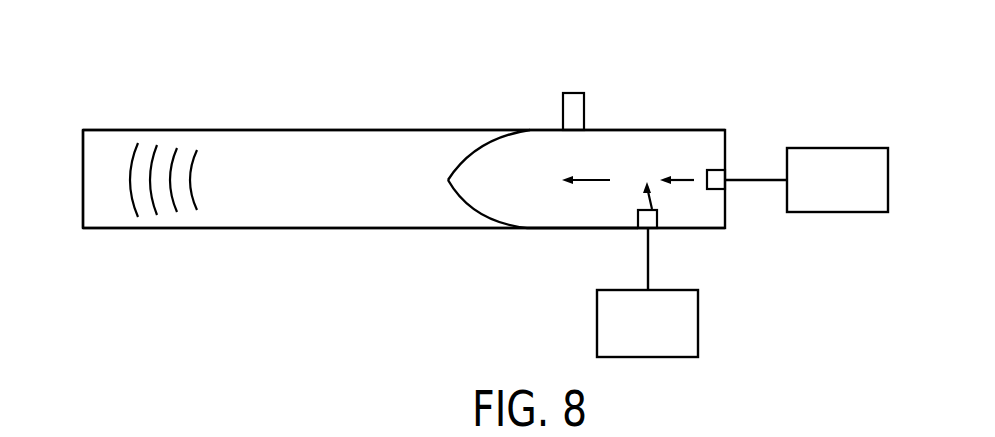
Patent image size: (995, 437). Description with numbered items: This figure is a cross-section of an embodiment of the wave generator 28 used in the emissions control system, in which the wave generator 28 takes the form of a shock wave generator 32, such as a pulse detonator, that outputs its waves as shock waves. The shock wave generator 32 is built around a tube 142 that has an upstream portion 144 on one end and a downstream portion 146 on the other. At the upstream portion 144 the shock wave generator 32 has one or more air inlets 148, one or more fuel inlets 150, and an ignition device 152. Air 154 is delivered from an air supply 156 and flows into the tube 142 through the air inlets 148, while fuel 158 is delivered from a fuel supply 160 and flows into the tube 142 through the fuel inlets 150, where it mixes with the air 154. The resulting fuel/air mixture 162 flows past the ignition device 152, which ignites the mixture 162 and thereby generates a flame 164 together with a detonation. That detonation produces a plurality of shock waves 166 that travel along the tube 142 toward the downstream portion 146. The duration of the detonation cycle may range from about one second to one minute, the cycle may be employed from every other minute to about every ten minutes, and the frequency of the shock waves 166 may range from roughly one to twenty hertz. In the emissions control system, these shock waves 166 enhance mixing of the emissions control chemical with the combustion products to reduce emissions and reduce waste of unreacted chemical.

The wave generator 28 is at (317, 110).
The shock wave generator 32 is at (402, 129).
The tube 142 is at (405, 228).
The upstream portion 144 is at (618, 238).
The downstream portion 146 is at (117, 240).
The air inlet 148 is at (718, 170).
The fuel inlet 150 is at (657, 222).
The ignition device 152 is at (574, 93).
The air 154 is at (688, 180).
The air supply 156 is at (836, 148).
The fuel 158 is at (648, 203).
The fuel supply 160 is at (698, 325).
The fuel/air mixture 162 is at (596, 180).
The flame 164 is at (492, 153).
The shock waves 166 is at (133, 180).